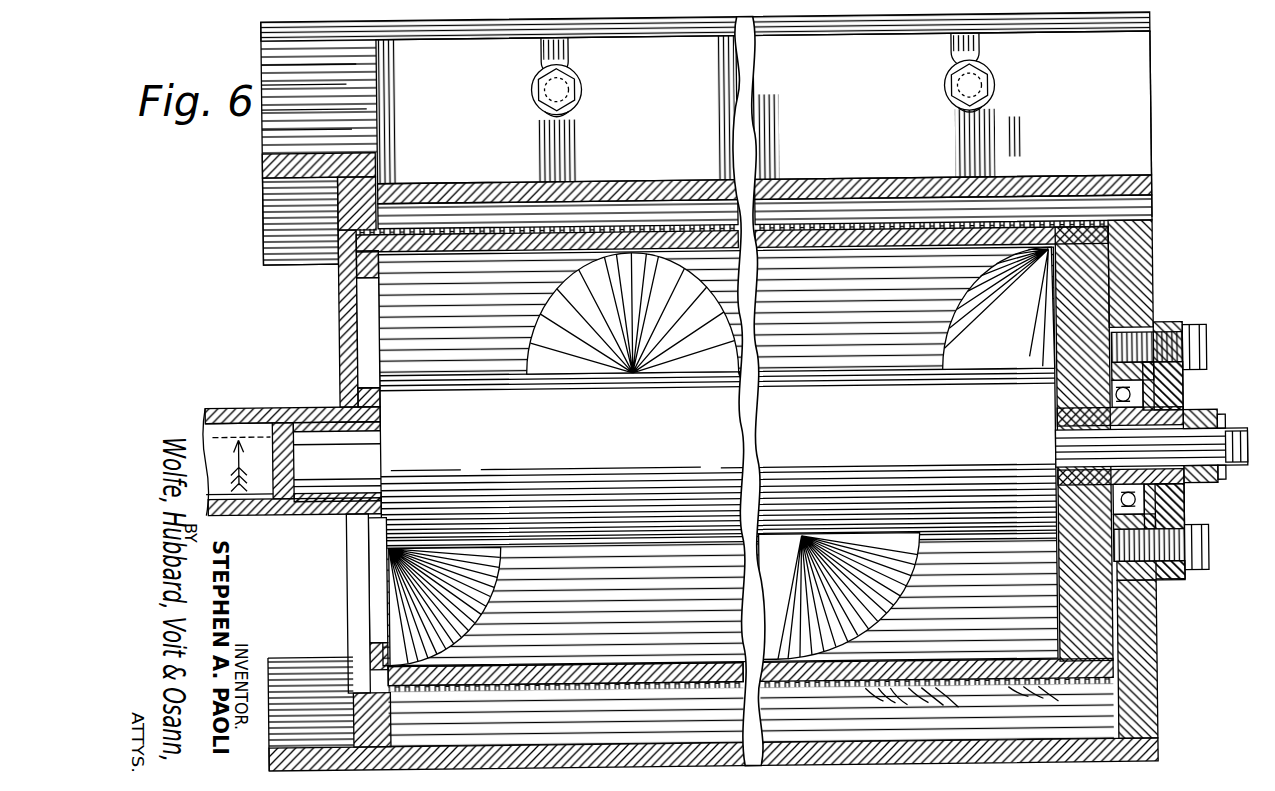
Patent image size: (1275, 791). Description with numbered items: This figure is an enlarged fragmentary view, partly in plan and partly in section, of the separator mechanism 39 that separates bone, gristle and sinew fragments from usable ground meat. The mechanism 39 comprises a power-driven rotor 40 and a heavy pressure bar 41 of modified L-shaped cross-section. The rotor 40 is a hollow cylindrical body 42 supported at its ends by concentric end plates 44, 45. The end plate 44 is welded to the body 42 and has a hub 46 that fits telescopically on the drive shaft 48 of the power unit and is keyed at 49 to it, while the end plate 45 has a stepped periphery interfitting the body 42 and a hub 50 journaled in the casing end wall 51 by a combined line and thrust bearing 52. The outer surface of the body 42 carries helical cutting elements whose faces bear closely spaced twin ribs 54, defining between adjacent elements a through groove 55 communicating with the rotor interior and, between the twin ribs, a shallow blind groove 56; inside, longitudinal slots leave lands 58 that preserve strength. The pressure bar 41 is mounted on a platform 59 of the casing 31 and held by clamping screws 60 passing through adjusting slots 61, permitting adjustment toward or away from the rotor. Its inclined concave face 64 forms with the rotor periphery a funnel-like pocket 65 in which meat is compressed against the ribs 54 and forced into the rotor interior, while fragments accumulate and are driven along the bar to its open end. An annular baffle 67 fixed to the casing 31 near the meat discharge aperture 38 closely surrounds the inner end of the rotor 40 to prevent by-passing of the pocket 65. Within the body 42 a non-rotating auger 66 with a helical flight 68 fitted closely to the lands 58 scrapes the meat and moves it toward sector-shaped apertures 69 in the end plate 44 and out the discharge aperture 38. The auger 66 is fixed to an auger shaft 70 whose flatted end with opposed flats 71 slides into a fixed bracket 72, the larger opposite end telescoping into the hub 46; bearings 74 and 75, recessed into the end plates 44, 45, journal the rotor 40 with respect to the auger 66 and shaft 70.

The casing 31 is at (1140, 752).
The meat discharge aperture 38 is at (281, 265).
The separator mechanism 39 is at (1125, 160).
The rotor 40 is at (600, 700).
The pressure bar 41 is at (862, 186).
The hollow cylindrical body 42 is at (660, 678).
The end plate 44 is at (358, 562).
The end plate 45 is at (1100, 268).
The hub 46 is at (258, 512).
The drive shaft 48 is at (213, 453).
The key 49 is at (233, 420).
The hub 50 is at (1165, 413).
The casing end wall 51 is at (1150, 628).
The combined line and thrust bearing 52 is at (1140, 505).
The twin ribs 54 is at (887, 708).
The through groove 55 is at (942, 703).
The blind groove 56 is at (1044, 700).
The lands 58 is at (842, 236).
The platform 59 is at (358, 90).
The clamping screws 60 is at (575, 94).
The adjusting slots 61 is at (568, 44).
The inclined concave face 64 is at (637, 205).
The funnel-like pocket 65 is at (893, 210).
The auger 66 is at (395, 395).
The annular baffle 67 is at (358, 178).
The helical flight 68 is at (686, 366).
The sector shaped apertures 69 is at (370, 305).
The auger shaft 70 is at (1060, 445).
The opposed flats 71 is at (1212, 432).
The fixed bracket 72 is at (1203, 420).
The bearing 74 is at (326, 427).
The bearing 75 is at (1057, 470).